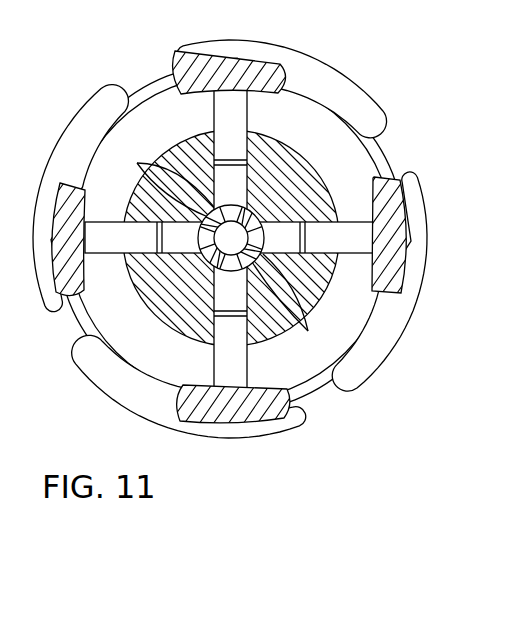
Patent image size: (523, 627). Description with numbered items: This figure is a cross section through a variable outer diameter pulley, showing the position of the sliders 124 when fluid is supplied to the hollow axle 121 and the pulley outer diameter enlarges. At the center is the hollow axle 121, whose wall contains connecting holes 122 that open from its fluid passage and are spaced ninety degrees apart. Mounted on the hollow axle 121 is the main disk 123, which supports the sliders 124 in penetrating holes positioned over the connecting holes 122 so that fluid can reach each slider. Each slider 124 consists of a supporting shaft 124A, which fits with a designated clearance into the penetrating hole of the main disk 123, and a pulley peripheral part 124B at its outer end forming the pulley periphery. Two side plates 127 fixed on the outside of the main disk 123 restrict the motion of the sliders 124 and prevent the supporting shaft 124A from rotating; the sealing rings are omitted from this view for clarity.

The hollow axle 121 is at (221, 268).
The connecting holes 122 is at (148, 163).
The main disk 123 is at (310, 177).
The slider 124 is at (100, 106).
The supporting shaft 124A is at (233, 112).
The pulley peripheral part 124B is at (355, 94).
The side plates 127 is at (143, 90).